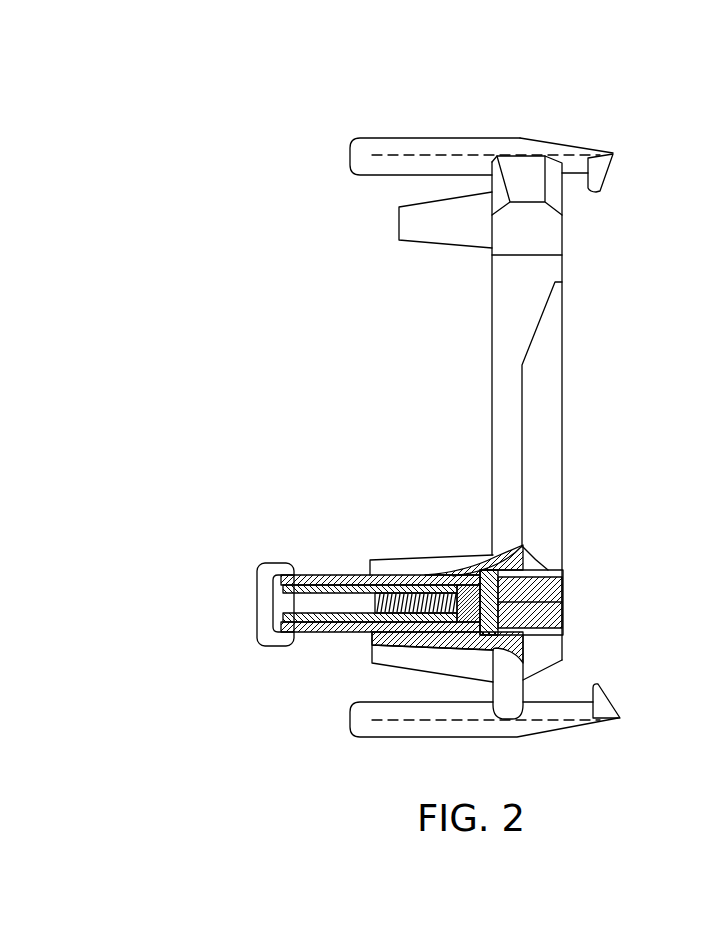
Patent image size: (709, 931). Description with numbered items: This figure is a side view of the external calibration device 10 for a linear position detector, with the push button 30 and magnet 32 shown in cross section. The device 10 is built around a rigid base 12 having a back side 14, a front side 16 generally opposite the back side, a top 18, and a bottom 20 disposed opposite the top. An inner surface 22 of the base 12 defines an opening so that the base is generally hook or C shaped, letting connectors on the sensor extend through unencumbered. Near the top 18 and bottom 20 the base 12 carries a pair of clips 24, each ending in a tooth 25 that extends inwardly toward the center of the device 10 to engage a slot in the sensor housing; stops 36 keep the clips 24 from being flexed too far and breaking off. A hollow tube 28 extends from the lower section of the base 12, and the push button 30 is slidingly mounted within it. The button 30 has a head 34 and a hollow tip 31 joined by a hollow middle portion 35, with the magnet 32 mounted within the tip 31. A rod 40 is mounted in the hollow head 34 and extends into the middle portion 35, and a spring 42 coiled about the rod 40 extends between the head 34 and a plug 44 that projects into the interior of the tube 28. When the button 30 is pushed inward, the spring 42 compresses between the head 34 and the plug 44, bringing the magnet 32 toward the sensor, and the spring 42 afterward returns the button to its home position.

The external calibration device 10 is at (230, 161).
The base 12 is at (563, 241).
The back side 14 is at (598, 352).
The front side 16 is at (358, 354).
The top 18 is at (522, 152).
The bottom 20 is at (507, 720).
The inner surface 22 is at (531, 313).
The clip 24 is at (397, 146).
The tooth 25 is at (613, 176).
The hollow tube 28 is at (388, 560).
The push button 30 is at (243, 551).
The tip 31 is at (540, 572).
The magnet 32 is at (563, 590).
The head 34 is at (257, 620).
The middle portion 35 is at (320, 633).
The stop 36 is at (399, 222).
The rod 40 is at (286, 602).
The spring 42 is at (380, 600).
The plug 44 is at (465, 572).